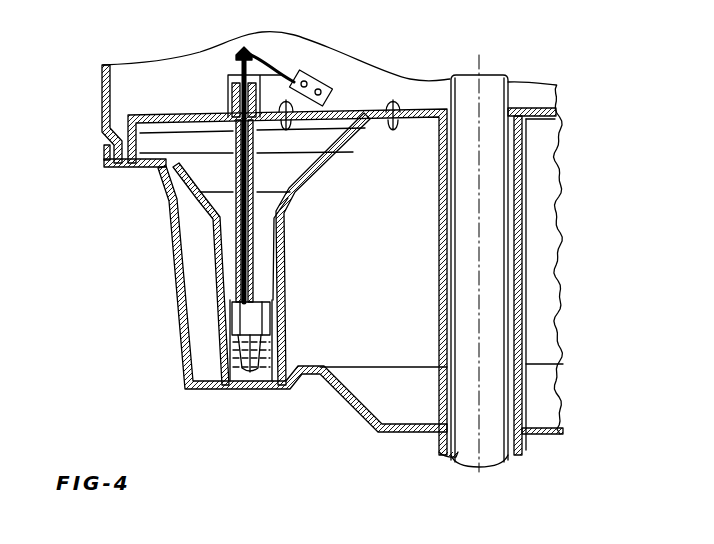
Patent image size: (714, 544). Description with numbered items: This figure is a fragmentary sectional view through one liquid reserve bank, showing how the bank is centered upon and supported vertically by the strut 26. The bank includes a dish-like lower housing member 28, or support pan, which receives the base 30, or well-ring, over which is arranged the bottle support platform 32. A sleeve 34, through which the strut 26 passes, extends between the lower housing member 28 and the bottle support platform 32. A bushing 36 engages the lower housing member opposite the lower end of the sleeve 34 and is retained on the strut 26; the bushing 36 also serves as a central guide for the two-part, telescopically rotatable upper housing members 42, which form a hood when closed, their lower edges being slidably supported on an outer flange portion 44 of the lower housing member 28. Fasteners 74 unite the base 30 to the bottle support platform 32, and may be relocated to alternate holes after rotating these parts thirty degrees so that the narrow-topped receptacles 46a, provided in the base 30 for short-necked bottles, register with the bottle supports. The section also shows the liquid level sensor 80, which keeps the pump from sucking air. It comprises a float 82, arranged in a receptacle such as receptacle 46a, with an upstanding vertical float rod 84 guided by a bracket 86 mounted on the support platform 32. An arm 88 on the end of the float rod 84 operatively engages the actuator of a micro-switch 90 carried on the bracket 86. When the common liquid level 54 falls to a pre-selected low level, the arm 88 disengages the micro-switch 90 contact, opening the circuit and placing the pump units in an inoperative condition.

The strut 26 is at (503, 76).
The lower housing member 28 is at (181, 338).
The base 30 is at (556, 140).
The bottle support platform 32 is at (558, 87).
The sleeve 34 is at (523, 233).
The bushing 36 is at (456, 450).
The upper housing members 42 is at (102, 99).
The outer flange portion 44 is at (107, 168).
The receptacles 46a is at (283, 253).
The liquid level 54 is at (278, 296).
The fasteners 74 is at (395, 103).
The liquid level sensor 80 is at (205, 252).
The float 82 is at (236, 314).
The float rod 84 is at (236, 61).
The bracket 86 is at (314, 73).
The arm 88 is at (282, 74).
The micro-switch 90 is at (326, 81).